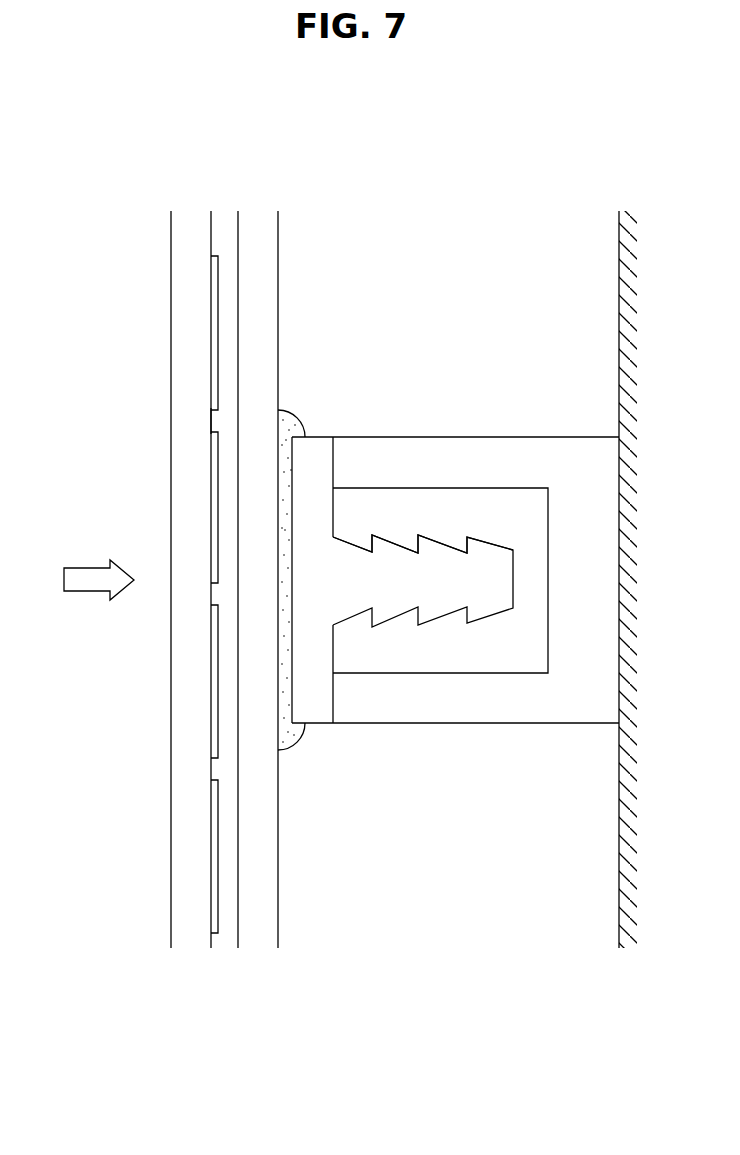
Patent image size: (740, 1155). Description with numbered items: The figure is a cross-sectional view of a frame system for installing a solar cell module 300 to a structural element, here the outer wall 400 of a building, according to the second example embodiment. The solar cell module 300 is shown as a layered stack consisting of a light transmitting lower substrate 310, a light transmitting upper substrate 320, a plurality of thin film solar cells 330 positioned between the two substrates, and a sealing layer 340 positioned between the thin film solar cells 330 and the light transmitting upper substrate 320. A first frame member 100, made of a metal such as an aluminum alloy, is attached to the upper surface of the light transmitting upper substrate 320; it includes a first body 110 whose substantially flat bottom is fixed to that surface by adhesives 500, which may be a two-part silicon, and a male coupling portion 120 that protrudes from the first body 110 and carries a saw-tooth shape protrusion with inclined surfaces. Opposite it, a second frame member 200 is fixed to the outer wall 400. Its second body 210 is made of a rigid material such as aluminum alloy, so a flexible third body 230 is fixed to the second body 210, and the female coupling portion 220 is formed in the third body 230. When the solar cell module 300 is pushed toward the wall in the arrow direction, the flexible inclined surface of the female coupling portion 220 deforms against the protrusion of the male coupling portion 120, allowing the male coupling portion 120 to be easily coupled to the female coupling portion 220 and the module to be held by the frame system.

The first frame member 100 is at (402, 637).
The first body 110 is at (320, 702).
The male coupling portion 120 is at (400, 593).
The second frame member 200 is at (455, 525).
The second body 210 is at (512, 462).
The female coupling portion 220 is at (404, 545).
The third body 230 is at (458, 505).
The solar cell module 300 is at (184, 538).
The light transmitting lower substrate 310 is at (193, 220).
The light transmitting upper substrate 320 is at (259, 220).
The thin film solar cells 330 is at (214, 489).
The sealing layer 340 is at (212, 420).
The outer wall 400 is at (619, 278).
The adhesives 500 is at (292, 425).